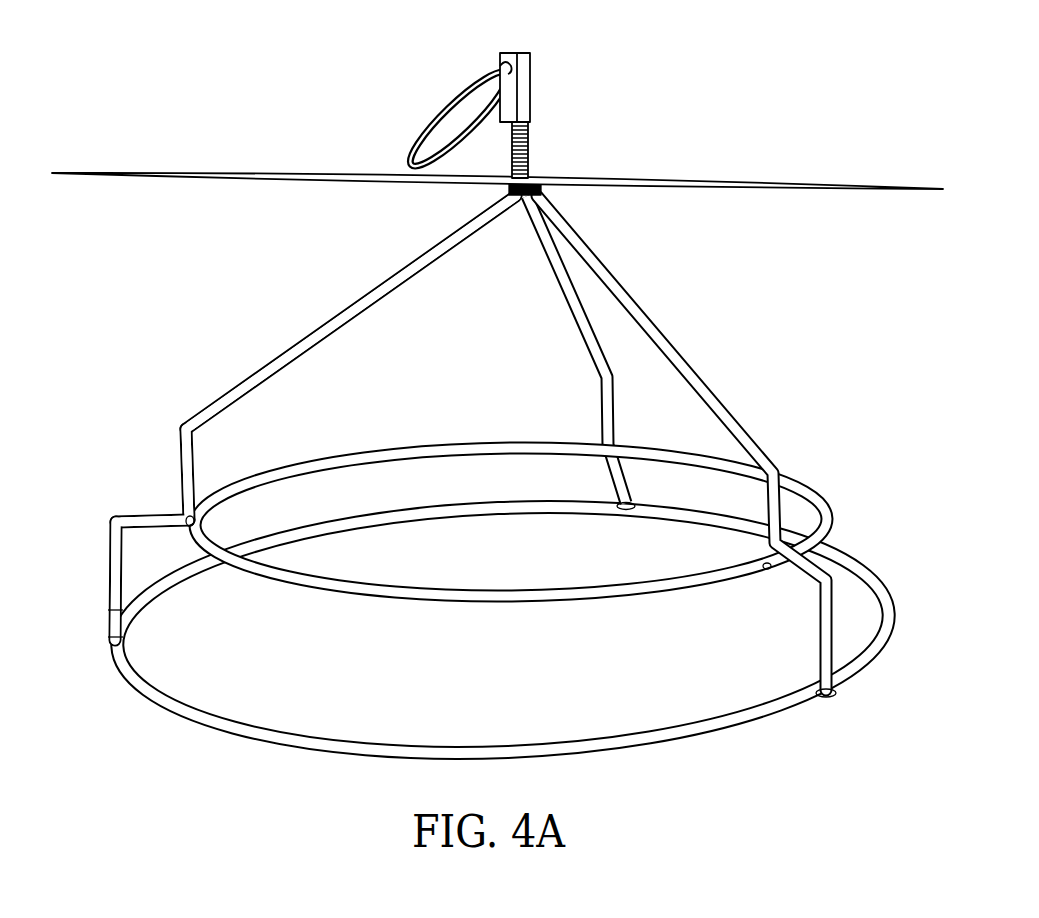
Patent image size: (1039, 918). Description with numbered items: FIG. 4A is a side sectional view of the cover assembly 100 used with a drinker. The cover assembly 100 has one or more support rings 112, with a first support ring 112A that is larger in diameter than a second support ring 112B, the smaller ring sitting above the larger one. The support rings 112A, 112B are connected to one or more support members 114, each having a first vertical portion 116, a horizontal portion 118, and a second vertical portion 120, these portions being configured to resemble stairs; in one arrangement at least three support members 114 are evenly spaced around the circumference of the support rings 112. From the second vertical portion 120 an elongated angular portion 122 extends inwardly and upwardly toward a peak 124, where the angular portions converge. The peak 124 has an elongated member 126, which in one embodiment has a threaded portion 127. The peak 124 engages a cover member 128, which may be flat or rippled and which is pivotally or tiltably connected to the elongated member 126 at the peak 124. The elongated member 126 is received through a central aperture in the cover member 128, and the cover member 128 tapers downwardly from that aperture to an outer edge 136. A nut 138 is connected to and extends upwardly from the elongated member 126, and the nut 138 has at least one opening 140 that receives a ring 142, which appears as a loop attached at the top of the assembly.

The cover assembly 100 is at (213, 800).
The support rings 112 is at (483, 750).
The first support ring 112A is at (247, 728).
The second support ring 112B is at (325, 588).
The support member 114 is at (707, 395).
The first vertical portion 116 is at (108, 570).
The horizontal portion 118 is at (118, 518).
The second vertical portion 120 is at (180, 463).
The elongated angular portion 122 is at (258, 372).
The peak 124 is at (531, 201).
The elongated member 126 is at (527, 149).
The threaded portion 127 is at (512, 155).
The cover member 128 is at (658, 181).
The outer edge 136 is at (943, 189).
The nut 138 is at (535, 88).
The opening 140 is at (507, 58).
The ring 142 is at (452, 101).